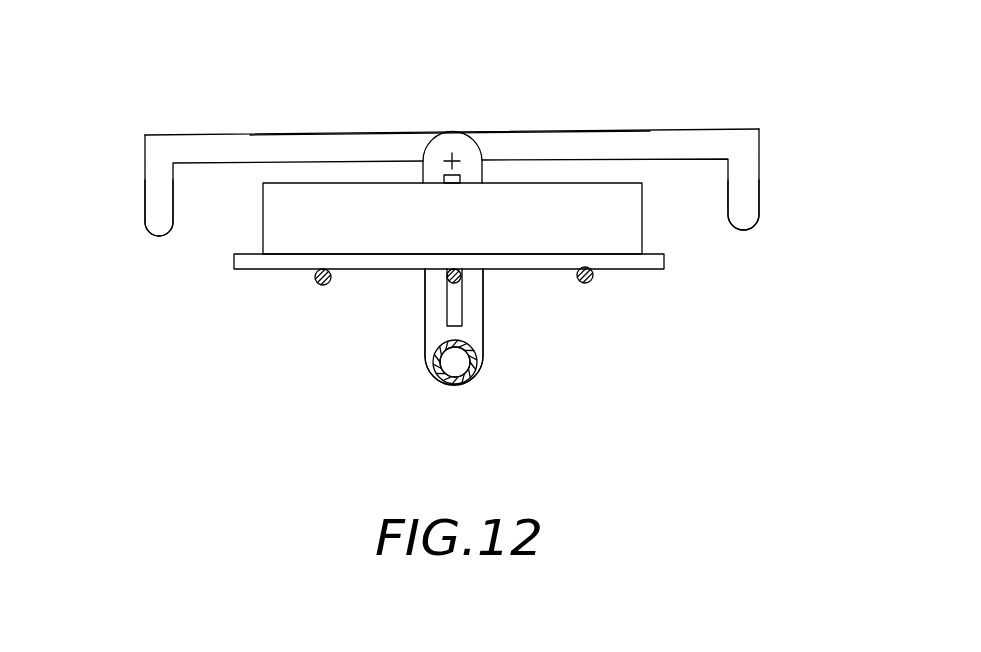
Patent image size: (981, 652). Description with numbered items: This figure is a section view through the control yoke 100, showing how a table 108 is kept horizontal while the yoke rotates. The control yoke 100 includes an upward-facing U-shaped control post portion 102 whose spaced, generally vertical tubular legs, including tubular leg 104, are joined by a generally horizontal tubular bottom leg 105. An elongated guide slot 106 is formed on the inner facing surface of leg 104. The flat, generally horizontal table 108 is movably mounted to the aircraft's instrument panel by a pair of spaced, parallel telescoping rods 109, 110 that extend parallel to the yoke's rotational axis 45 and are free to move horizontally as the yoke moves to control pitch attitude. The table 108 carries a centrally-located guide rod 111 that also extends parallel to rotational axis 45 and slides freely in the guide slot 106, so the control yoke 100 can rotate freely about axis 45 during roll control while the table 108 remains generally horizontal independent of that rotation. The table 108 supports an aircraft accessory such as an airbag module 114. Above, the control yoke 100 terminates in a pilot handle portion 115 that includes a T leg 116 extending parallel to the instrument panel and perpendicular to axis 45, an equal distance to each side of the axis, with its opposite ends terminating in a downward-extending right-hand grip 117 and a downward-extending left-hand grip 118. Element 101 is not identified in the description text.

The control yoke 100 is at (725, 105).
The pivot pin 101 is at (455, 132).
The rotational axis 45 is at (455, 160).
The pilot handle portion 115 is at (237, 118).
The T leg 116 is at (360, 134).
The right-hand grip 117 is at (160, 201).
The left-hand grip 118 is at (753, 180).
The airbag module 114 is at (620, 208).
The table 108 is at (664, 262).
The telescoping rod 109 is at (320, 285).
The telescoping rod 110 is at (580, 283).
The guide rod 111 is at (447, 280).
The guide slot 106 is at (453, 312).
The tubular leg 104 is at (485, 347).
The tubular bottom leg 105 is at (460, 367).
The U-shaped control post portion 102 is at (422, 385).